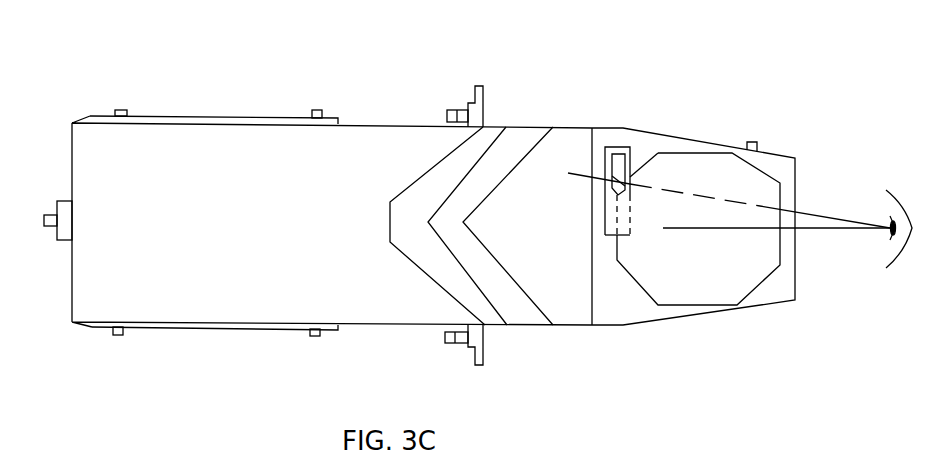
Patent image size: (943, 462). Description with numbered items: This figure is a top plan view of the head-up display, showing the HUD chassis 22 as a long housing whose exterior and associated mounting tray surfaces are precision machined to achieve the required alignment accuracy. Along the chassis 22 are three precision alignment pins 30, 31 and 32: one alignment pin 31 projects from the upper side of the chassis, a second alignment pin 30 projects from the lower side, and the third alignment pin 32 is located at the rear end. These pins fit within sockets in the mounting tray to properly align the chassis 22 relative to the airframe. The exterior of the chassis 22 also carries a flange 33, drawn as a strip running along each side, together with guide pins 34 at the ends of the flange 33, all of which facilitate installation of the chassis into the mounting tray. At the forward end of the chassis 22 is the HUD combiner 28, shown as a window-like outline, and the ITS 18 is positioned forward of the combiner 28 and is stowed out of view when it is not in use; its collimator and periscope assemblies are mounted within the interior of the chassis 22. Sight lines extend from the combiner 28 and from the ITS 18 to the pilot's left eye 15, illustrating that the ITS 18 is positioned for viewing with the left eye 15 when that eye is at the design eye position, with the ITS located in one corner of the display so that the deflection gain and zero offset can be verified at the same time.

The eye 15 is at (746, 229).
The ITS 18 is at (618, 152).
The HUD chassis 22 is at (297, 344).
The HUD combiner 28 is at (735, 282).
The precision alignment pin 30 is at (459, 344).
The precision alignment pin 31 is at (462, 108).
The precision alignment pin 32 is at (52, 228).
The flange 33 is at (200, 116).
The guide pins 34 is at (122, 109).